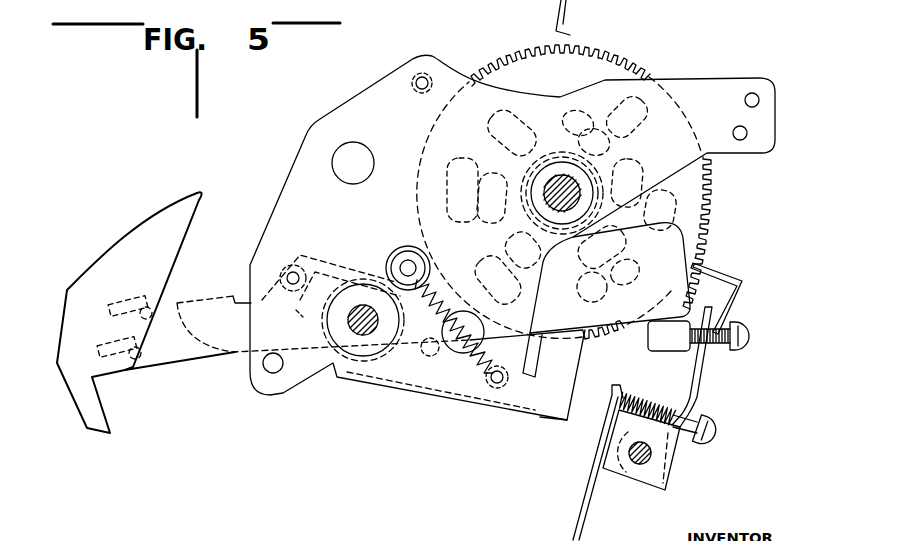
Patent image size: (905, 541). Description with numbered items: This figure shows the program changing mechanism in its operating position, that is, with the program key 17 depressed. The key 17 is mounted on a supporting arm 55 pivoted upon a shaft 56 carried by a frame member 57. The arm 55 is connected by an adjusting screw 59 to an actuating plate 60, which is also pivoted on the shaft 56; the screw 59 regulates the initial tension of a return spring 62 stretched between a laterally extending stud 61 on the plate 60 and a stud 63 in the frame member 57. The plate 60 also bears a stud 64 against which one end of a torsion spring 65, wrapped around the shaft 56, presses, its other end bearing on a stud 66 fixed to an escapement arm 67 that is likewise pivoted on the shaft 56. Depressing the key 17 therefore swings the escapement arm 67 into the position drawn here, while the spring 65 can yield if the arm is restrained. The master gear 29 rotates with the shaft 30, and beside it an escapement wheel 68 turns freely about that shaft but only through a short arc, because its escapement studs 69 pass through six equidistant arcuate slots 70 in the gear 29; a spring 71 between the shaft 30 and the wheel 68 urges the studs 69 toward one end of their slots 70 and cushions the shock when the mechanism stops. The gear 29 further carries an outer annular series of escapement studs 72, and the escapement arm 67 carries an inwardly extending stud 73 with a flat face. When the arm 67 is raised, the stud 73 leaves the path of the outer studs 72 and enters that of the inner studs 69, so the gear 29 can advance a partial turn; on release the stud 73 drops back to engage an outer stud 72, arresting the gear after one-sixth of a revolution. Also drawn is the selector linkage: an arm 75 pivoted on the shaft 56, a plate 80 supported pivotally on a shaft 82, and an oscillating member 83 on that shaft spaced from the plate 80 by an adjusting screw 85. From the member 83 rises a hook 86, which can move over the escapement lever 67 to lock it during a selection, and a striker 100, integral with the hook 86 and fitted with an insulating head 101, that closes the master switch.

The program key 17 is at (128, 253).
The supporting arm 55 is at (170, 357).
The arm 75 is at (207, 300).
The frame member 57 is at (328, 123).
The master gear 29 is at (607, 63).
The shaft 30 is at (578, 187).
The escapement studs 69 is at (508, 147).
The arcuate slots 70 is at (530, 123).
The spring 71 is at (553, 153).
The escapement wheel 68 is at (577, 85).
The escapement studs 72 is at (663, 77).
The adjusting screw 59 is at (298, 275).
The stud 61 is at (406, 262).
The actuating plate 60 is at (300, 313).
The shaft 56 is at (355, 337).
The return spring 62 is at (440, 297).
The stud 64 is at (475, 327).
The stud 63 is at (497, 387).
The torsion spring 65 is at (403, 360).
The stud 66 is at (437, 367).
The escapement arm 67 is at (670, 250).
The stud 73 is at (562, 375).
The hook 86 is at (720, 273).
The striker 100 is at (700, 380).
The insulating head 101 is at (746, 333).
The adjusting screw 85 is at (712, 425).
The oscillating member 83 is at (672, 464).
The shaft 82 is at (640, 464).
The plate 80 is at (585, 502).